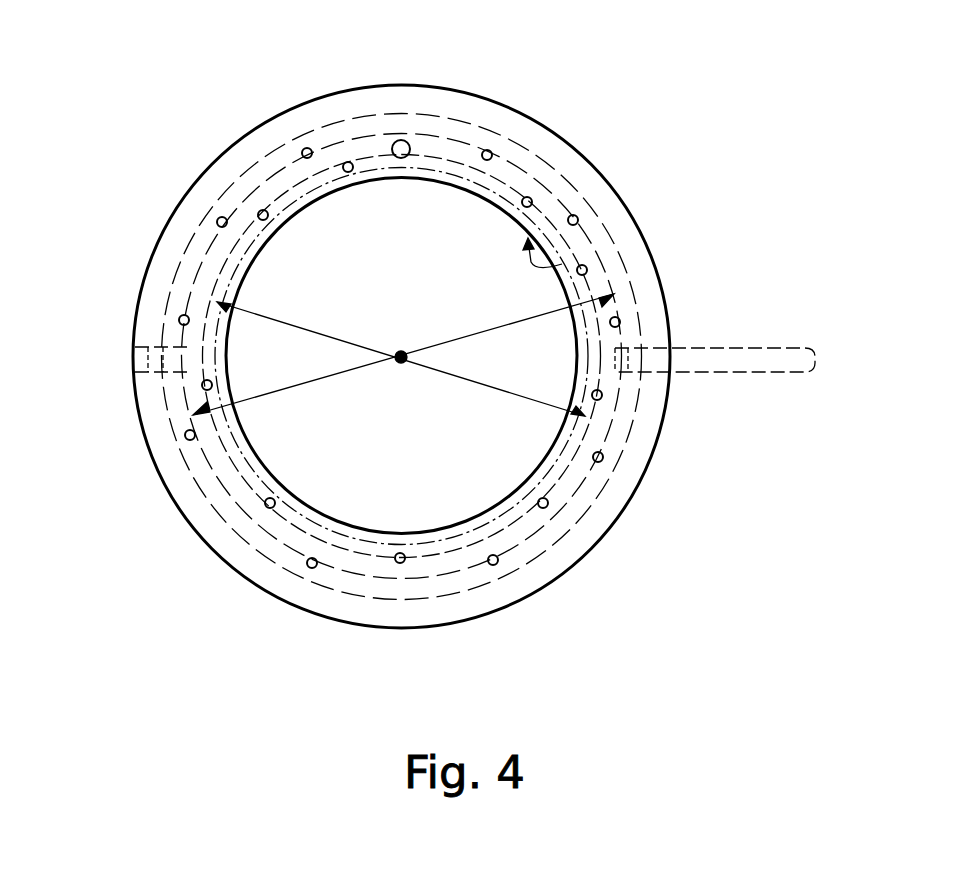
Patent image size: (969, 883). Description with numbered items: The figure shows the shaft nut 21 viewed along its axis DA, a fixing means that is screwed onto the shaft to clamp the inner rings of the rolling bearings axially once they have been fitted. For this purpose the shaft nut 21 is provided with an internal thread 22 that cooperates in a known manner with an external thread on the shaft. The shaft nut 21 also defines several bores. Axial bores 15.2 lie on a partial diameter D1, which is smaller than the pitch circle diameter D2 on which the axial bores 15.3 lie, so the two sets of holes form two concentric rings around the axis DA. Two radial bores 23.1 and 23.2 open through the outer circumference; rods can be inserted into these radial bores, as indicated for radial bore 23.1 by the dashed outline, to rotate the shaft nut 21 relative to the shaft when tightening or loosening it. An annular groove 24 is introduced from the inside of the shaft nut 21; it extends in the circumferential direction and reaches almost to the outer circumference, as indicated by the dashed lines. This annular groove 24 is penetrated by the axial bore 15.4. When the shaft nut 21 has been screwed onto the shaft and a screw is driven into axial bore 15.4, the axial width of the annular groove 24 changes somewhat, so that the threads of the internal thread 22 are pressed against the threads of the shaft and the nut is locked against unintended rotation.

The shaft nut 21 is at (585, 97).
The internal thread 22 is at (548, 250).
The annular groove 24 is at (403, 190).
The axial bores 15.2 is at (401, 564).
The axial bores 15.3 is at (305, 147).
The axial bore 15.4 is at (402, 140).
The radial bore 23.1 is at (625, 373).
The radial bore 23.2 is at (143, 360).
The rotation axis DA is at (407, 337).
The partial diameter D1 is at (401, 359).
The pitch circle diameter D2 is at (403, 354).